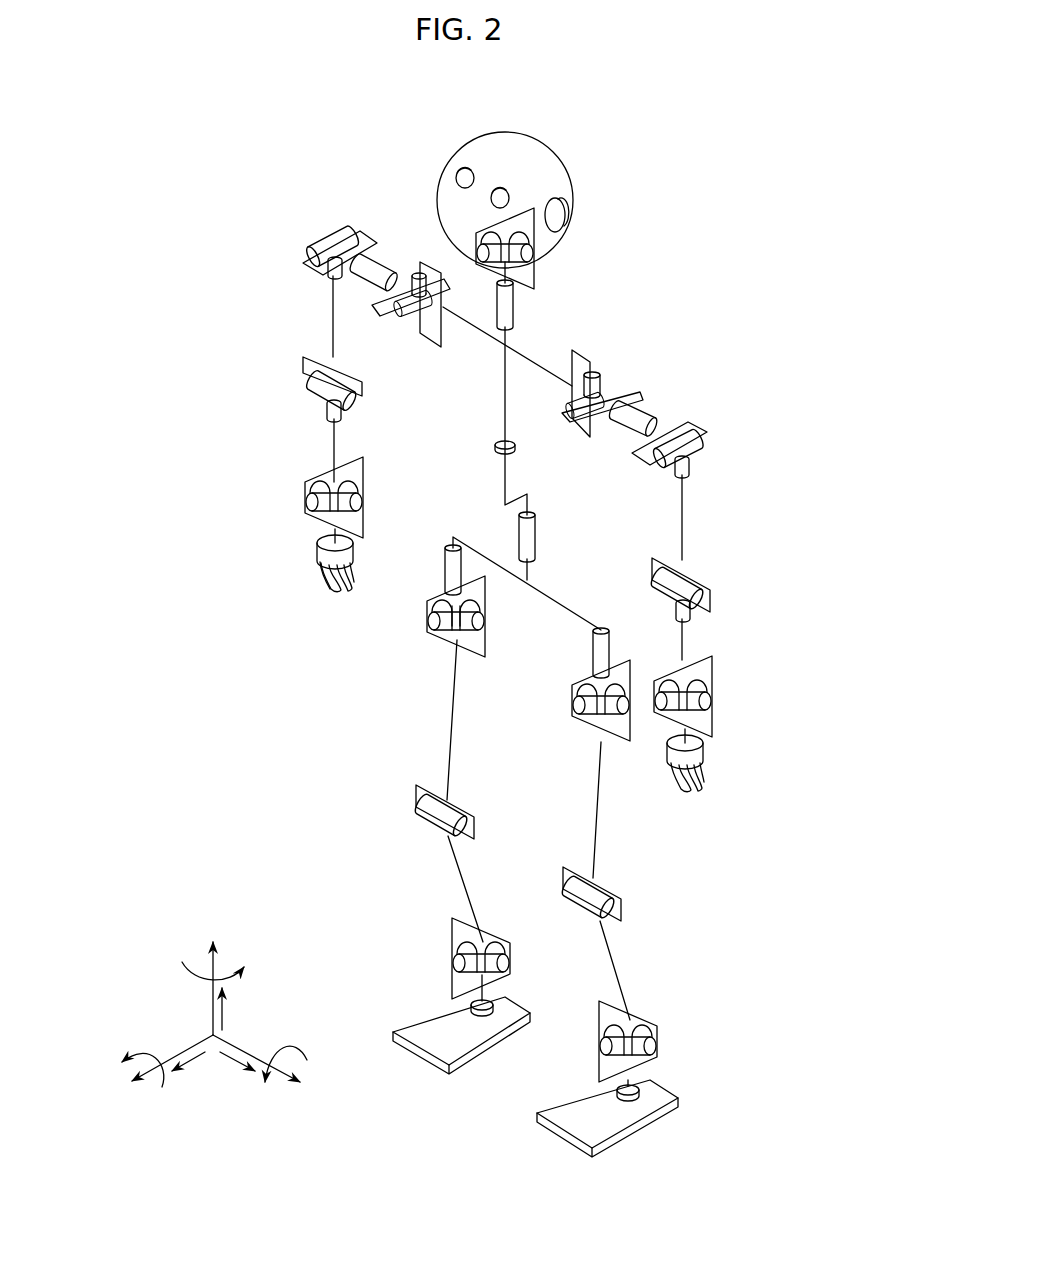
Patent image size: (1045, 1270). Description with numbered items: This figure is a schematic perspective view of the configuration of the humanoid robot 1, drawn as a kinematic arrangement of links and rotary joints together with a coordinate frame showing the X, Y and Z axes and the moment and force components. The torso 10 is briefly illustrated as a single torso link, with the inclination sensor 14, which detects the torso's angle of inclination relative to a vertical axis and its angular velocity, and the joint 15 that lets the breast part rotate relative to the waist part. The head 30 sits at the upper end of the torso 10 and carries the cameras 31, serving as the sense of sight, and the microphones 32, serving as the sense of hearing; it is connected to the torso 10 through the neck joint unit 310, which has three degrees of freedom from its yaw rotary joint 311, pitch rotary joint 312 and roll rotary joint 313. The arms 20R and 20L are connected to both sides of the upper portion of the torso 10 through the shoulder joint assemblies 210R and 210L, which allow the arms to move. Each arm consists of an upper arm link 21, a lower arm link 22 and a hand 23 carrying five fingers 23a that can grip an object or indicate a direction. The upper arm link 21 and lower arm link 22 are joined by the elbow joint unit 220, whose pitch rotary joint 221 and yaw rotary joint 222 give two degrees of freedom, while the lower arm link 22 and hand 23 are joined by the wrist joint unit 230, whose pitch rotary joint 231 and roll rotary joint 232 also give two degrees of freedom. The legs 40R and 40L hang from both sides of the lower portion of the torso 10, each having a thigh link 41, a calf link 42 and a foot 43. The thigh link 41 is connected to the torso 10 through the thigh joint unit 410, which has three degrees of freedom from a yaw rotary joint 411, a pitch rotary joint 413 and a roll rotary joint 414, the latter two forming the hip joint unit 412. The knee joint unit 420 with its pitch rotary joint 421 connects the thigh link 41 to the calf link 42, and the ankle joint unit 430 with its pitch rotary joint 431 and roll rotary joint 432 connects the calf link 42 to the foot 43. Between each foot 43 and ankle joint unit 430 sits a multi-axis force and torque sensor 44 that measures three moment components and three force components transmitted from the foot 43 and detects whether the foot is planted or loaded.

The humanoid robot 1 is at (785, 151).
The torso 10 is at (506, 416).
The inclination sensor 14 is at (513, 447).
The joint 15 is at (536, 536).
The right arm 20R is at (230, 377).
The left arm 20L is at (764, 569).
The upper arm link 21 is at (332, 314).
The lower arm link 22 is at (332, 438).
The hand 23 is at (310, 565).
The fingers 23a is at (324, 579).
The head 30 is at (566, 152).
The cameras 31 is at (492, 199).
The microphones 32 is at (560, 213).
The neck joint unit 310 is at (568, 289).
The rotary joint 311 is at (514, 306).
The rotary joint 312 is at (524, 249).
The rotary joint 313 is at (477, 250).
The right shoulder joint assembly 210R is at (329, 222).
The left shoulder joint assembly 210L is at (650, 371).
The elbow joint unit 220 is at (297, 360).
The rotary joint 221 is at (336, 393).
The rotary joint 222 is at (340, 412).
The wrist joint unit 230 is at (303, 513).
The rotary joint 231 is at (357, 503).
The rotary joint 232 is at (356, 486).
The right leg 40R is at (358, 757).
The left leg 40L is at (657, 845).
The thigh joint unit 410 is at (414, 624).
The rotary joint 411 is at (449, 560).
The hip joint unit 412 is at (469, 645).
The rotary joint 413 is at (484, 611).
The rotary joint 414 is at (436, 636).
The thigh link 41 is at (449, 735).
The knee joint unit 420 is at (409, 829).
The rotary joint 421 is at (449, 816).
The calf link 42 is at (457, 882).
The ankle joint unit 430 is at (442, 953).
The rotary joint 431 is at (500, 965).
The rotary joint 432 is at (489, 946).
The foot 43 is at (419, 1049).
The multi-axis force and torque sensor 44 is at (490, 1012).